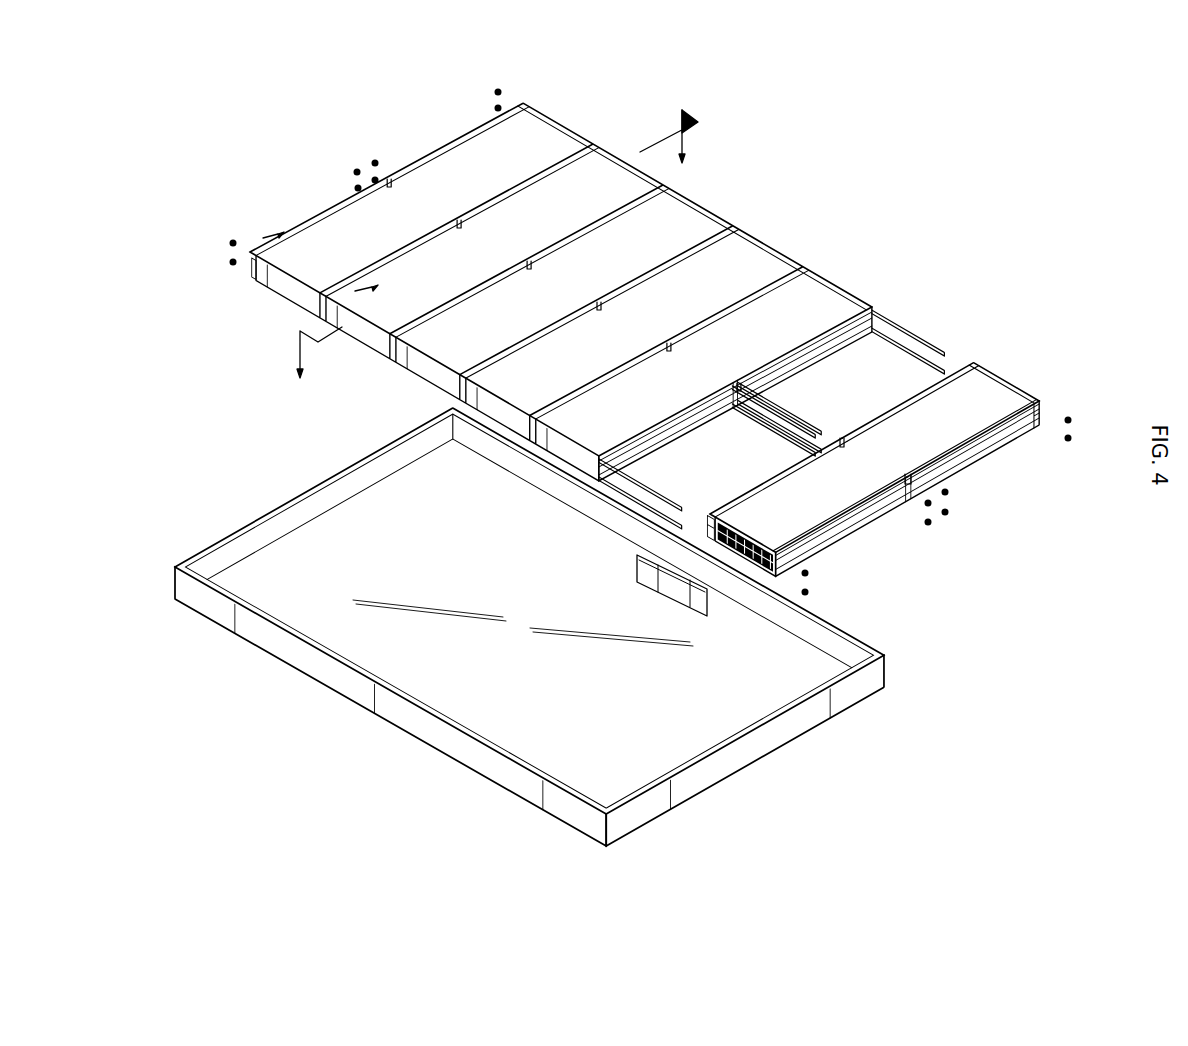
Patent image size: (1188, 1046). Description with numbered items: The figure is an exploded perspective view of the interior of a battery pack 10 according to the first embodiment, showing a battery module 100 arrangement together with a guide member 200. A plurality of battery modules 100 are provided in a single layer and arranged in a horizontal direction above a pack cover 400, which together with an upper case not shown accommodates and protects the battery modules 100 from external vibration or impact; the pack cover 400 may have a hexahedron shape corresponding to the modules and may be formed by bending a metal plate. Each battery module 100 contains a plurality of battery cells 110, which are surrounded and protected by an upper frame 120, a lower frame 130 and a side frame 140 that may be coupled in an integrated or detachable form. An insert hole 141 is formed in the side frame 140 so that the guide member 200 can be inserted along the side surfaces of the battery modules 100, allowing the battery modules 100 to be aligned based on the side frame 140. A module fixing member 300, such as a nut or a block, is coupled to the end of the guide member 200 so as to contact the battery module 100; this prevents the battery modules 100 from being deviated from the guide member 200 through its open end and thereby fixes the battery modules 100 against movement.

The battery pack 10 is at (273, 100).
The battery module 100 is at (573, 114).
The battery cell 110 is at (722, 512).
The upper frame 120 is at (997, 388).
The lower frame 130 is at (988, 461).
The side frame 140 is at (671, 584).
The insert hole 141 is at (1047, 406).
The guide member 200 is at (907, 323).
The module fixing member 300 is at (355, 170).
The pack cover 400 is at (763, 745).